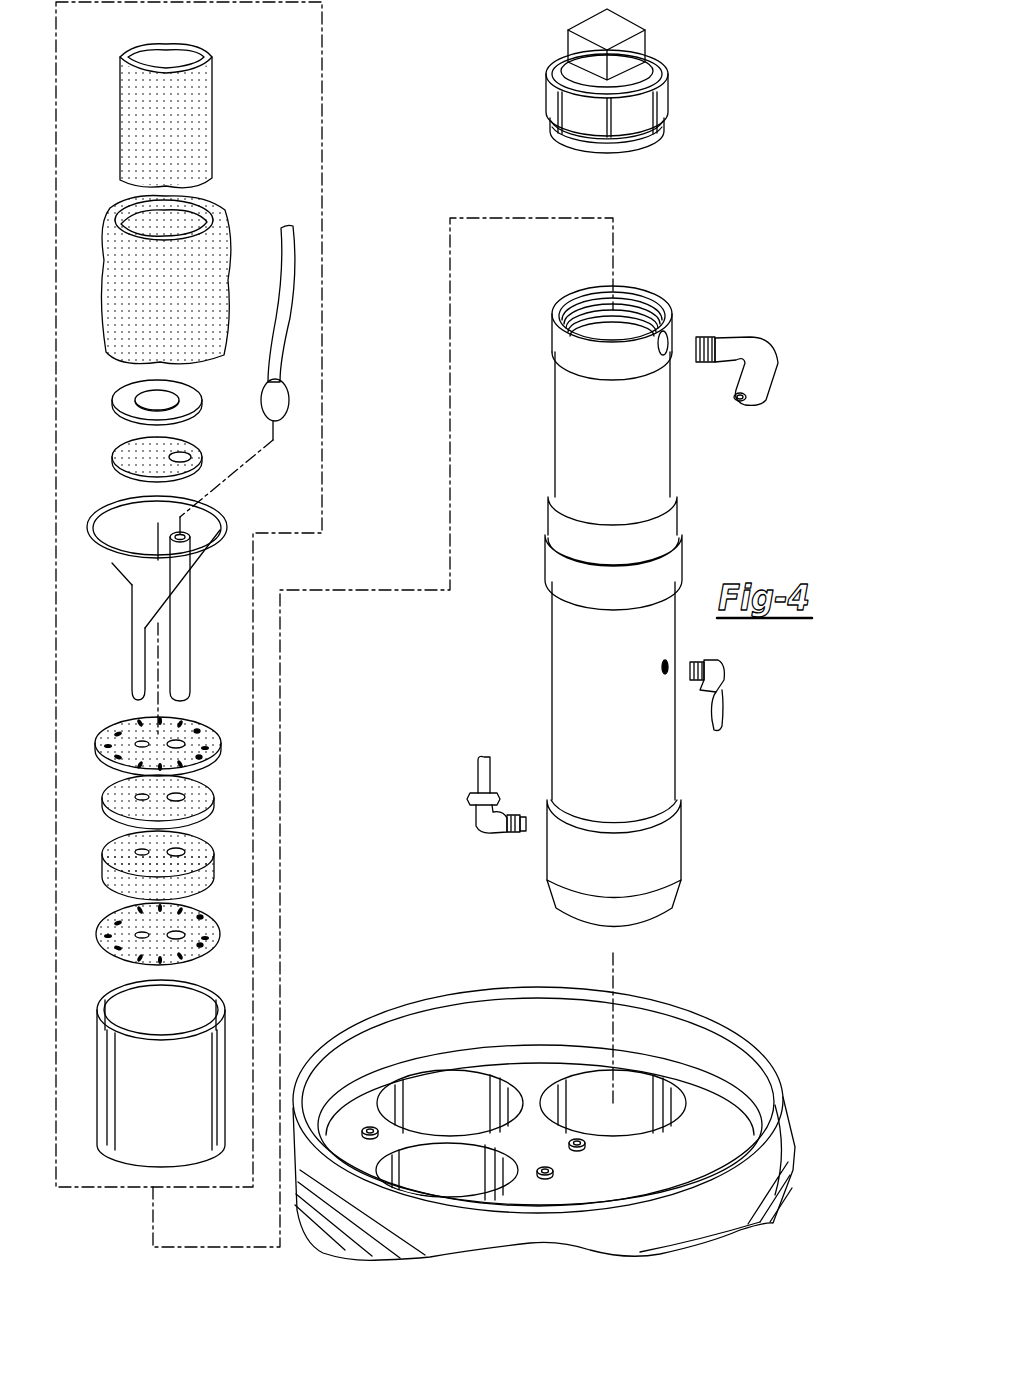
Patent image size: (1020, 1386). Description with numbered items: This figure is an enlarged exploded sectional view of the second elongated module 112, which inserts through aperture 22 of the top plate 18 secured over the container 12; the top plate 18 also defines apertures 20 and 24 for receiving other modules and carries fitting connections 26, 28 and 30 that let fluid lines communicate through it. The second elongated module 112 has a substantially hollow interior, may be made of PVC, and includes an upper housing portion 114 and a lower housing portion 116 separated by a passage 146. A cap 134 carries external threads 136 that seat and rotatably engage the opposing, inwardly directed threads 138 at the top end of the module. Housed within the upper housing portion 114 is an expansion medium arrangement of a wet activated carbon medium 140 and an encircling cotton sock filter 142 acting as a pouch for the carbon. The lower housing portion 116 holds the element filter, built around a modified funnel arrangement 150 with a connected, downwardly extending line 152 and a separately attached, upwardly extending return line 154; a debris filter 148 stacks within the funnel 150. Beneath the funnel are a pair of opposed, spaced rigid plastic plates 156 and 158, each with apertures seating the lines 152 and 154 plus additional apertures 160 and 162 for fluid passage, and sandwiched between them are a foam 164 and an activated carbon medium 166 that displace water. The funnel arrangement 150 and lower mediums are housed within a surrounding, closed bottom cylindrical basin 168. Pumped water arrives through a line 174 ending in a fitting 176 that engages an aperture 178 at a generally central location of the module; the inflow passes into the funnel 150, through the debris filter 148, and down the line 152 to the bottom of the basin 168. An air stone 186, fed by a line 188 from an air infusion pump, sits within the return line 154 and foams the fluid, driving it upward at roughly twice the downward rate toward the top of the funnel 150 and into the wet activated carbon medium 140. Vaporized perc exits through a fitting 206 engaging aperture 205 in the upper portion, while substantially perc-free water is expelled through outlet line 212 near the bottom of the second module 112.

The container 12 is at (324, 1250).
The top plate 18 is at (726, 1137).
The aperture 20 is at (425, 1166).
The aperture 22 is at (640, 1090).
The aperture 24 is at (435, 1093).
The fitting connection 26 is at (553, 1172).
The fitting connection 28 is at (585, 1144).
The fitting connection 30 is at (370, 1127).
The second elongated module 112 is at (498, 625).
The upper housing portion 114 is at (560, 415).
The lower housing portion 116 is at (558, 720).
The cap 134 is at (546, 80).
The external threads 136 is at (650, 140).
The inwardly directed threads 138 is at (644, 298).
The wet activated carbon medium 140 is at (208, 110).
The cotton sock filter 142 is at (214, 240).
The passage 146 is at (124, 392).
The debris filter 148 is at (128, 457).
The modified funnel arrangement 150 is at (127, 566).
The downwardly extending line 152 is at (132, 678).
The return line 154 is at (187, 658).
The rigid plastic plate 156 is at (122, 732).
The rigid plastic plate 158 is at (120, 920).
The apertures 160 is at (199, 757).
The apertures 162 is at (200, 945).
The foam 164 is at (208, 800).
The activated carbon medium 166 is at (120, 850).
The closed bottom cylindrical basin 168 is at (222, 1036).
The line 174 is at (722, 720).
The fitting 176 is at (722, 678).
The aperture 178 is at (668, 667).
The air stone 186 is at (282, 396).
The line 188 is at (290, 282).
The aperture 205 is at (670, 350).
The fitting 206 is at (774, 352).
The line 212 is at (478, 818).